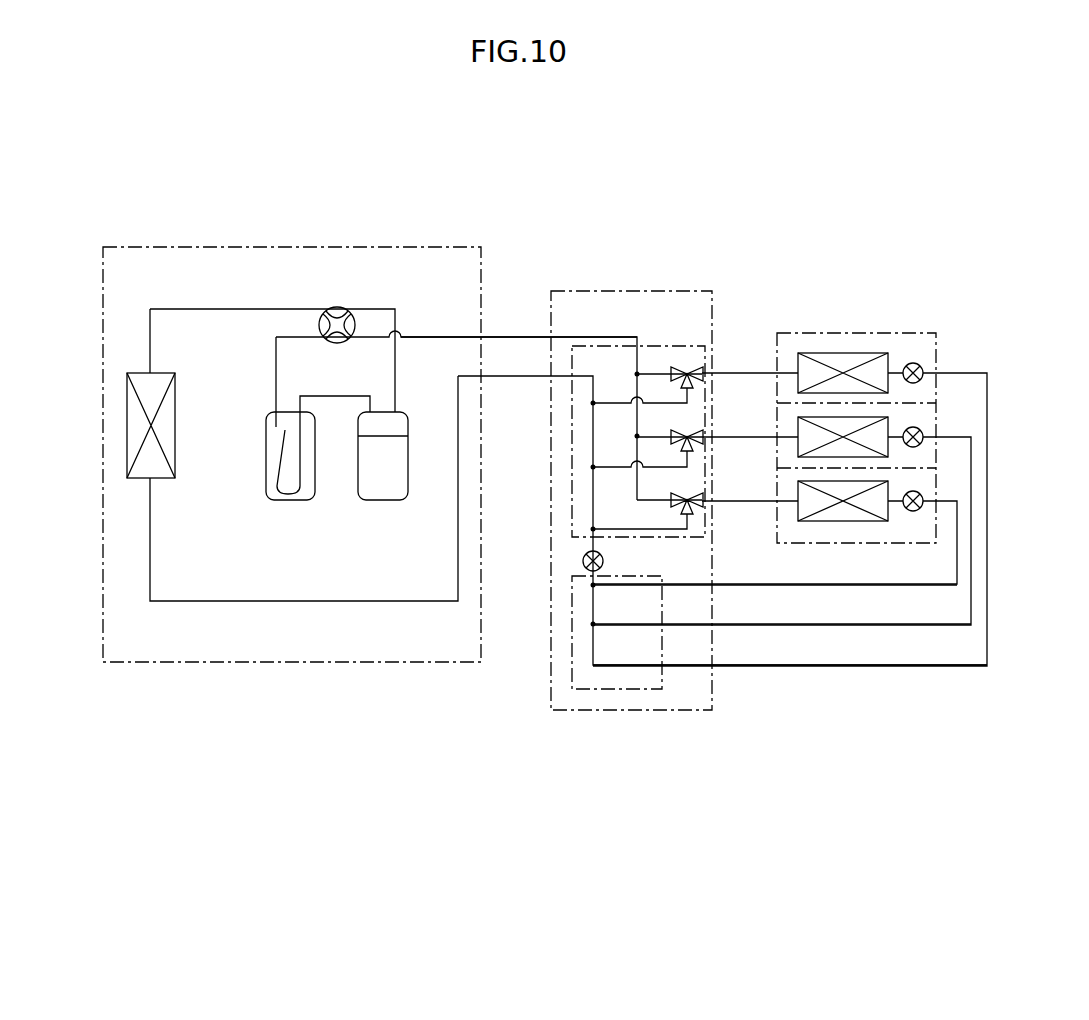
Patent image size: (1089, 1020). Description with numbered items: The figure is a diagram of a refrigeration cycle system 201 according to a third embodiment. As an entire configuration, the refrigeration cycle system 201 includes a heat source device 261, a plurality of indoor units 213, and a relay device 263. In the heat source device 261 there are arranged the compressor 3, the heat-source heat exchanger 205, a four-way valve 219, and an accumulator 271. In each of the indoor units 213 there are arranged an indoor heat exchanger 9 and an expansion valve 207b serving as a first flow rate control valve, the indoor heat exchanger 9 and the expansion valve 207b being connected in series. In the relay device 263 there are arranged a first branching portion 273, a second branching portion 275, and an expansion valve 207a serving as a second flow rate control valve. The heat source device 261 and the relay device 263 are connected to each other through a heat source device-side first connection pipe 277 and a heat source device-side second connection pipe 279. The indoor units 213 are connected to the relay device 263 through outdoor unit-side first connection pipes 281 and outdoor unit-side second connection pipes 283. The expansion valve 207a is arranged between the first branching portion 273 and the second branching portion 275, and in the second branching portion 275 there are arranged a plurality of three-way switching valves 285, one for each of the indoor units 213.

The refrigeration cycle system 201 is at (165, 137).
The heat source device 261 is at (258, 247).
The four-way valve 219 is at (340, 307).
The heat-source heat exchanger 205 is at (178, 440).
The accumulator 271 is at (288, 502).
The compressor 3 is at (380, 502).
The heat source device-side first connection pipe 277 is at (513, 337).
The heat source device-side second connection pipe 279 is at (512, 378).
The relay device 263 is at (586, 291).
The first branching portion 273 is at (655, 346).
The three-way switching valve 285 is at (678, 366).
The outdoor unit-side first connection pipe 281 is at (730, 392).
The indoor unit 213 is at (777, 395).
The indoor heat exchanger 9 is at (862, 353).
The expansion valve (first flow rate control valve) 207b is at (921, 365).
The expansion valve (second flow rate control valve) 207a is at (582, 568).
The second branching portion 275 is at (640, 690).
The outdoor unit-side second connection pipe 283 is at (865, 586).